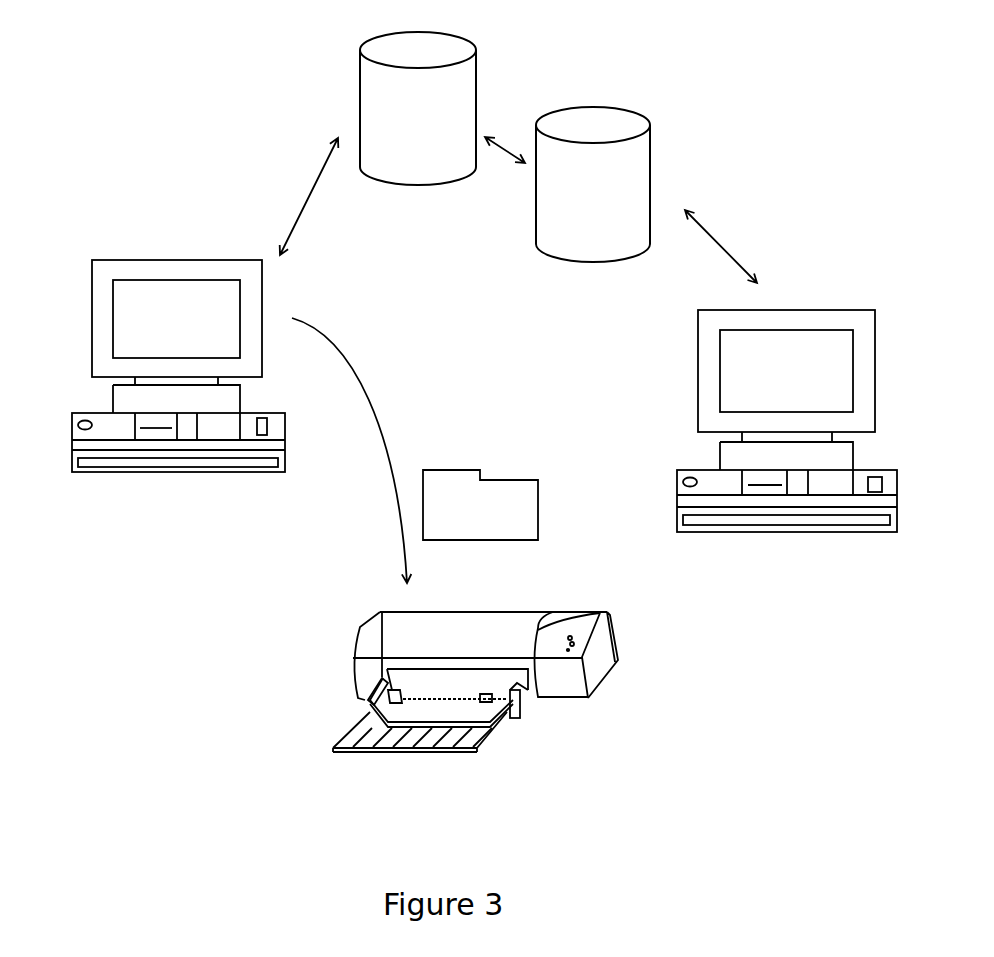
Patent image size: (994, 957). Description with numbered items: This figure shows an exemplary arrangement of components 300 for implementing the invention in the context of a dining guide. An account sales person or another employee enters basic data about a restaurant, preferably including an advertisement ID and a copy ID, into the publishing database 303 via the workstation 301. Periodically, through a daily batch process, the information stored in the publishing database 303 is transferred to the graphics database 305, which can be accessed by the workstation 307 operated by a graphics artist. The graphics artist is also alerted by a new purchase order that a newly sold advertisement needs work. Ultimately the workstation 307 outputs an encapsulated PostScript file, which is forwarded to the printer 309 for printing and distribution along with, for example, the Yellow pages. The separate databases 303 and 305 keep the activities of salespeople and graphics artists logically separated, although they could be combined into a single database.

The publishing system 300 is at (224, 142).
The workstation 301 is at (878, 433).
The publishing database 303 is at (652, 138).
The graphics database 305 is at (370, 42).
The workstation 307 is at (98, 347).
The printer 309 is at (615, 622).